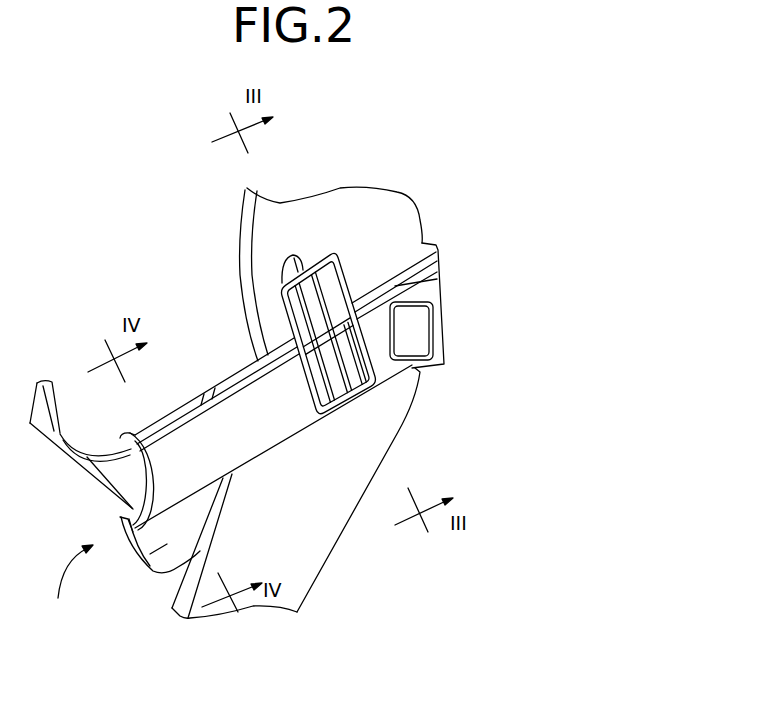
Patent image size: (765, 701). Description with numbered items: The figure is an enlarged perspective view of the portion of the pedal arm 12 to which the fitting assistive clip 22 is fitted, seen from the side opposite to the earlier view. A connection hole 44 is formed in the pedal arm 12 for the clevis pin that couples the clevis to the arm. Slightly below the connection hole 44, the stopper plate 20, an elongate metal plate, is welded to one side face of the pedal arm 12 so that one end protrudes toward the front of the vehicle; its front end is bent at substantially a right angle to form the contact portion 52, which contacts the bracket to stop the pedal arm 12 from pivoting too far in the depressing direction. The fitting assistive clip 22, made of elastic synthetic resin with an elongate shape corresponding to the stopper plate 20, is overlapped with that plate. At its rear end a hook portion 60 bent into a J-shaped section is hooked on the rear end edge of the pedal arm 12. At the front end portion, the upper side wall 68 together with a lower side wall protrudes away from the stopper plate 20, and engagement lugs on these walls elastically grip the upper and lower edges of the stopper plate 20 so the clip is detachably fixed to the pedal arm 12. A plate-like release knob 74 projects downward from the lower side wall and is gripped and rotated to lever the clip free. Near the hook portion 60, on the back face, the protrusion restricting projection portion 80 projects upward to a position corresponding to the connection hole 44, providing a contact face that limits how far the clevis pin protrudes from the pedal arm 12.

The pedal arm 12 is at (328, 515).
The stopper plate 20 is at (127, 458).
The fitting assistive clip 22 is at (69, 588).
The connection hole 44 is at (301, 256).
The contact portion 52 is at (63, 456).
The hook portion 60 is at (430, 271).
The upper side wall 68 is at (177, 410).
The release knob 74 is at (146, 568).
The protrusion restricting projection portion 80 is at (307, 311).